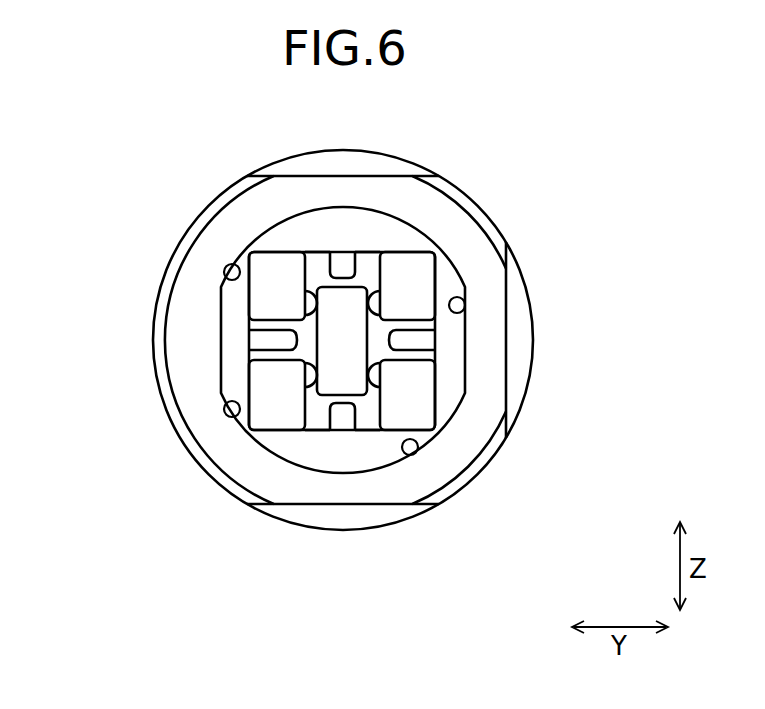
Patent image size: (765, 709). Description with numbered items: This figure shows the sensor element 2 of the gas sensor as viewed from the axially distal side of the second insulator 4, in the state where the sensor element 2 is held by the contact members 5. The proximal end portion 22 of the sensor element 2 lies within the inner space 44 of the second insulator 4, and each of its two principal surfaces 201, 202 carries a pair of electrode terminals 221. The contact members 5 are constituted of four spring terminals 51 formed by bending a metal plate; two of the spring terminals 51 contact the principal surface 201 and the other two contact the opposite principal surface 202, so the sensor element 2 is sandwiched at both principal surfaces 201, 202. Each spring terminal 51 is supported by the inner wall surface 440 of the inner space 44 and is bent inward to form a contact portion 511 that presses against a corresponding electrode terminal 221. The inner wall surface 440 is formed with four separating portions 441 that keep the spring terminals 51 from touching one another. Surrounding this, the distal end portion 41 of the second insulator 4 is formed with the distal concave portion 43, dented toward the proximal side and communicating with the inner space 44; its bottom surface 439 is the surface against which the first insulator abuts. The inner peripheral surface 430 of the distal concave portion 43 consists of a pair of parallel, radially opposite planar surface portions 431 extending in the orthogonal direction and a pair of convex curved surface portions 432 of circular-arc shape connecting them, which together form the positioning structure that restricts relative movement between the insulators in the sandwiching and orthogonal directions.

The sensor element 2 is at (341, 302).
The proximal end portion 22 is at (368, 420).
The electrode terminal 221 is at (388, 290).
The principal surface 201 is at (400, 339).
The principal surface 202 is at (292, 337).
The second insulator 4 is at (200, 468).
The distal end portion 41 is at (470, 440).
The distal concave portion 43 is at (235, 420).
The inner peripheral surface 430 is at (236, 262).
The planar surface portion 431 is at (461, 300).
The convex curved surface portion 432 is at (420, 448).
The bottom surface 439 is at (235, 372).
The inner space 44 is at (420, 432).
The inner wall surface 440 is at (290, 258).
The separating portion 441 is at (437, 295).
The contact member 5 is at (272, 265).
The spring terminal 51 is at (380, 300).
The contact portion 511 is at (305, 303).